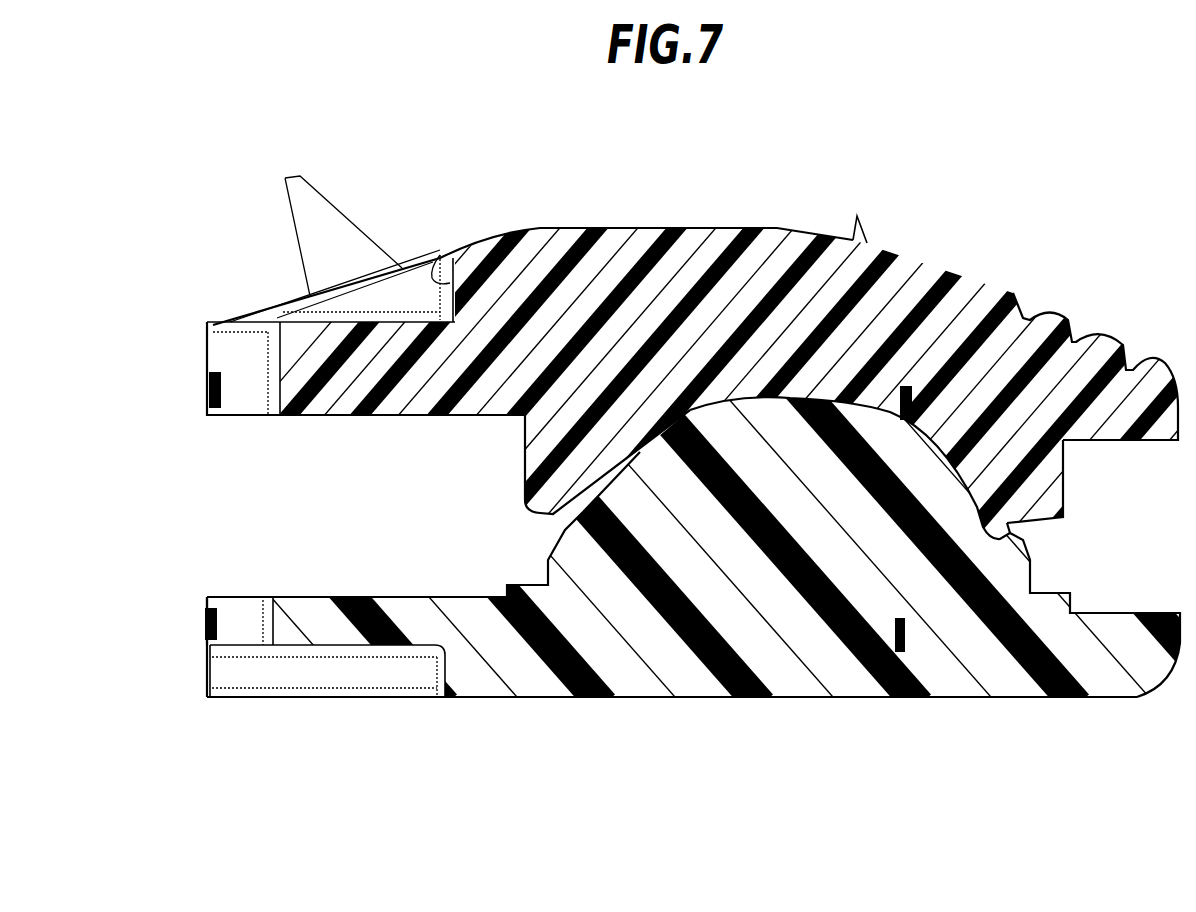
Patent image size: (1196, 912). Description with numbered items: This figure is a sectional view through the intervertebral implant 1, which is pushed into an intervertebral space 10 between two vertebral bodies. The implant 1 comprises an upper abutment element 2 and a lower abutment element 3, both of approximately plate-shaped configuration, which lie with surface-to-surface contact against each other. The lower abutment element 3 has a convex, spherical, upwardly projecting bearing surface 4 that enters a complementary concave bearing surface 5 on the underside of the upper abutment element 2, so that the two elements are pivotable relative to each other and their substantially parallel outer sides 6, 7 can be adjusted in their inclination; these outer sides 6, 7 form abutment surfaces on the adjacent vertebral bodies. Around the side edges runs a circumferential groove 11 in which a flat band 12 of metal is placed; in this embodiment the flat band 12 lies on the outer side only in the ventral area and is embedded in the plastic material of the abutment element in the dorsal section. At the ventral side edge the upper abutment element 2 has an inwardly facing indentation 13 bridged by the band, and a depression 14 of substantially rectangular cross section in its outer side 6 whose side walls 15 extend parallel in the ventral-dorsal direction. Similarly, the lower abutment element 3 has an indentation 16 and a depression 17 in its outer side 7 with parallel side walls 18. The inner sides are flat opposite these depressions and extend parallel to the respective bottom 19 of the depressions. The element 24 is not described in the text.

The intervertebral implant 1 is at (930, 199).
The upper abutment element 2 is at (1066, 312).
The lower abutment element 3 is at (1110, 700).
The bearing surface 4 is at (975, 470).
The bearing surface 5 is at (1015, 537).
The outer side 6 is at (662, 228).
The outer side 7 is at (807, 699).
The intervertebral space 10 is at (250, 522).
The circumferential groove 11 is at (209, 390).
The flat band 12 is at (909, 638).
The indentation 13 is at (268, 360).
The depression 14 is at (410, 322).
The side walls 15 is at (350, 302).
The indentation 16 is at (250, 625).
The depression 17 is at (430, 676).
The side walls 18 is at (347, 673).
The bottom 19 is at (276, 600).
The lip end wall 24 is at (453, 290).